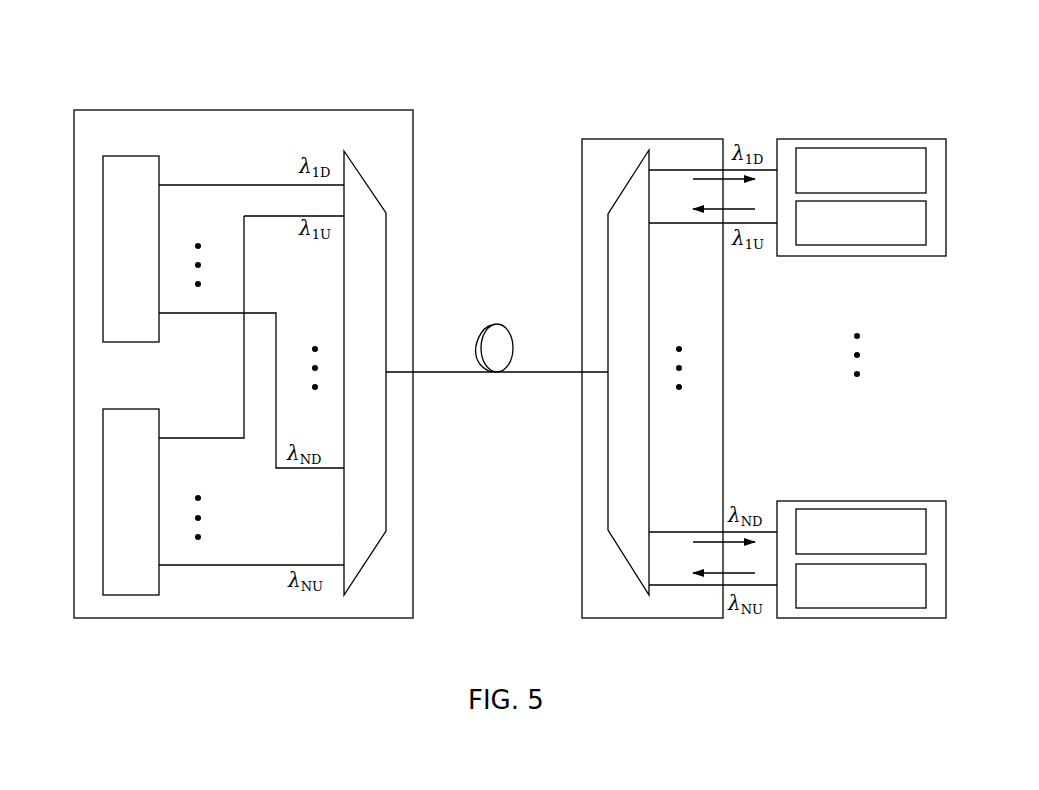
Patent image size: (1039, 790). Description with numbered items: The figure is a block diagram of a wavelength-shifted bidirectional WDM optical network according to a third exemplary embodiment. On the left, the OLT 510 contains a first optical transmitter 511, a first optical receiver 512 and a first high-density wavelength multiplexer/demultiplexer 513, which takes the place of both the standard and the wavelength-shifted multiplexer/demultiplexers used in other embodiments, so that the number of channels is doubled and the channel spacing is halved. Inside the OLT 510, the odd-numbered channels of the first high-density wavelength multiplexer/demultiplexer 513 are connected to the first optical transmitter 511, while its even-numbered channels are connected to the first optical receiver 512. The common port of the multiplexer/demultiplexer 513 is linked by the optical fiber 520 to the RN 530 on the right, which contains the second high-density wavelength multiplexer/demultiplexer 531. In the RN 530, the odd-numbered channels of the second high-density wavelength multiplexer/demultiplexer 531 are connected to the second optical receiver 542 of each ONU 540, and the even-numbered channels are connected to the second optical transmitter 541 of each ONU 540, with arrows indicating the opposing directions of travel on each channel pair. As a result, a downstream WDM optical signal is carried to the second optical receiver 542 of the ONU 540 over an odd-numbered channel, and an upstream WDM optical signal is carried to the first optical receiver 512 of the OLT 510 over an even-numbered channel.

The OLT 510 is at (212, 110).
The first optical transmitter 511 is at (131, 156).
The first optical receiver 512 is at (130, 595).
The first high-density wavelength multiplexer/demultiplexer 513 is at (370, 182).
The optical fiber 520 is at (497, 325).
The RN 530 is at (677, 139).
The second high-density wavelength multiplexer/demultiplexer 531 is at (630, 180).
The ONU 540 is at (855, 139).
The second optical transmitter 541 is at (926, 223).
The second optical receiver 542 is at (926, 170).